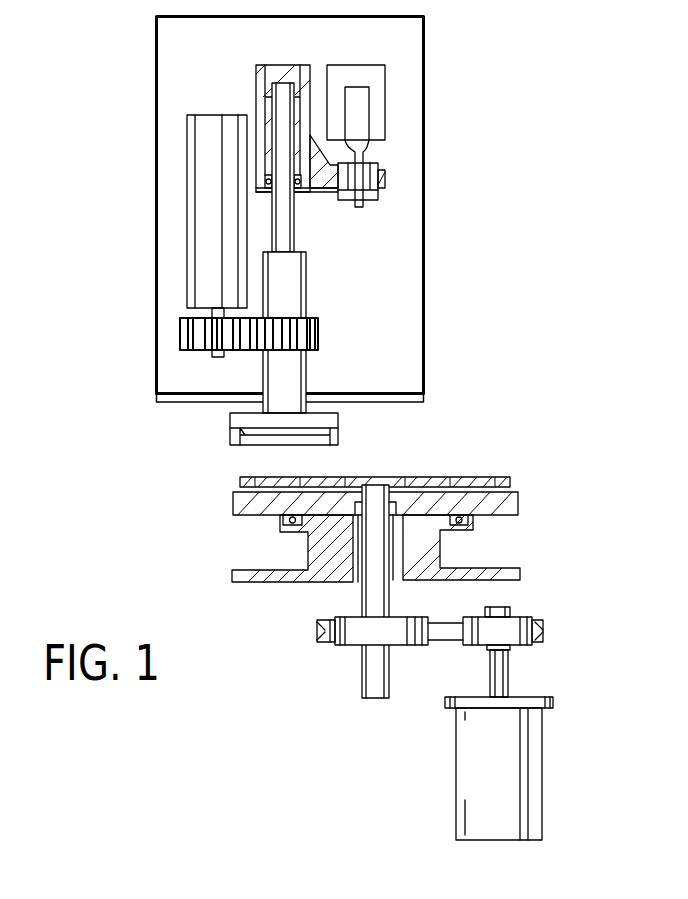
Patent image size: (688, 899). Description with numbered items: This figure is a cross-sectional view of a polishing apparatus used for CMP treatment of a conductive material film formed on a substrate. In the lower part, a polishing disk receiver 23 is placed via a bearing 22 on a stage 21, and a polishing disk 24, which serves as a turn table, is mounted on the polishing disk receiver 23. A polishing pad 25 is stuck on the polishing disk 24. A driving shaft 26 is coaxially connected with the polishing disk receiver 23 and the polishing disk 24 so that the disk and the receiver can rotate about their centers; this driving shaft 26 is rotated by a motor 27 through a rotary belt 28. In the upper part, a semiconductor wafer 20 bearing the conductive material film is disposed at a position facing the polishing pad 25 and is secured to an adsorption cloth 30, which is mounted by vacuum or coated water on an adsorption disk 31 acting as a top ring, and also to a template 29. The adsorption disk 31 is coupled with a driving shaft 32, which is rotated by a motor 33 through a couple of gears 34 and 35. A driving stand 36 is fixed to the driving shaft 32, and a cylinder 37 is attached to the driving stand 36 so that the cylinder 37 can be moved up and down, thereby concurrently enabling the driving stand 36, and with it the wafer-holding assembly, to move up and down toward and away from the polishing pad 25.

The semiconductor wafer 20 is at (295, 454).
The stage 21 is at (322, 552).
The bearing 22 is at (470, 523).
The polishing disk receiver 23 is at (517, 505).
The polishing disk 24 is at (412, 450).
The polishing pad 25 is at (487, 477).
The driving shaft 26 is at (377, 492).
The motor 27 is at (523, 770).
The rotary belt 28 is at (452, 636).
The template 29 is at (338, 430).
The adsorption cloth 30 is at (307, 432).
The adsorption disk 31 is at (230, 416).
The driving shaft 32 is at (295, 232).
The motor 33 is at (213, 115).
The gear 34 is at (180, 333).
The gear 35 is at (318, 333).
The driving stand 36 is at (283, 65).
The cylinder 37 is at (377, 106).